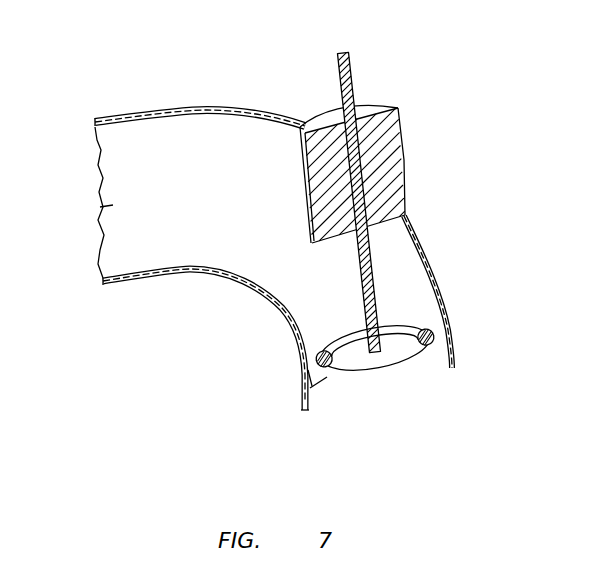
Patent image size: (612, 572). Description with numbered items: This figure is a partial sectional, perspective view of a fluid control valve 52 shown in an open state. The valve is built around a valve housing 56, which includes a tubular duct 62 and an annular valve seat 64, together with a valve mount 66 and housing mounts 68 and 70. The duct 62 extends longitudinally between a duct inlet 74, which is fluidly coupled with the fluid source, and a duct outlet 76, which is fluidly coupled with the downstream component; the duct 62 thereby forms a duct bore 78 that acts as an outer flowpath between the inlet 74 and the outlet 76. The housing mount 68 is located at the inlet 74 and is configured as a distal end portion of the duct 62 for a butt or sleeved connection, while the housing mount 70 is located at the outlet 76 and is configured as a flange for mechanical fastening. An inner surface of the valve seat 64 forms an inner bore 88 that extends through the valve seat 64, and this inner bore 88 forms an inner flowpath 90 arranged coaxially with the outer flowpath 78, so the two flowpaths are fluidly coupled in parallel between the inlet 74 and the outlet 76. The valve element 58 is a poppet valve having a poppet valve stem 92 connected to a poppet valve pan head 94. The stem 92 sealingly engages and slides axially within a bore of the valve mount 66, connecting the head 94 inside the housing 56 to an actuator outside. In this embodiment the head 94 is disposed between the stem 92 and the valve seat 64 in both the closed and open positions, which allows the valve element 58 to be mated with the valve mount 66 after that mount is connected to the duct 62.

The fluid control valve 52 is at (286, 242).
The valve housing 56 is at (200, 74).
The valve element 58 is at (358, 176).
The tubular duct 62 is at (319, 347).
The annular valve seat 64 is at (335, 383).
The valve mount 66 is at (404, 135).
The housing mount 68 is at (113, 118).
The housing mount 70 is at (452, 356).
The duct inlet 74 is at (100, 207).
The duct outlet 76 is at (320, 413).
The duct bore 78 is at (313, 363).
The inner bore 88 is at (428, 375).
The inner flowpath 90 is at (428, 375).
The poppet valve stem 92 is at (338, 86).
The poppet valve pan head 94 is at (403, 370).